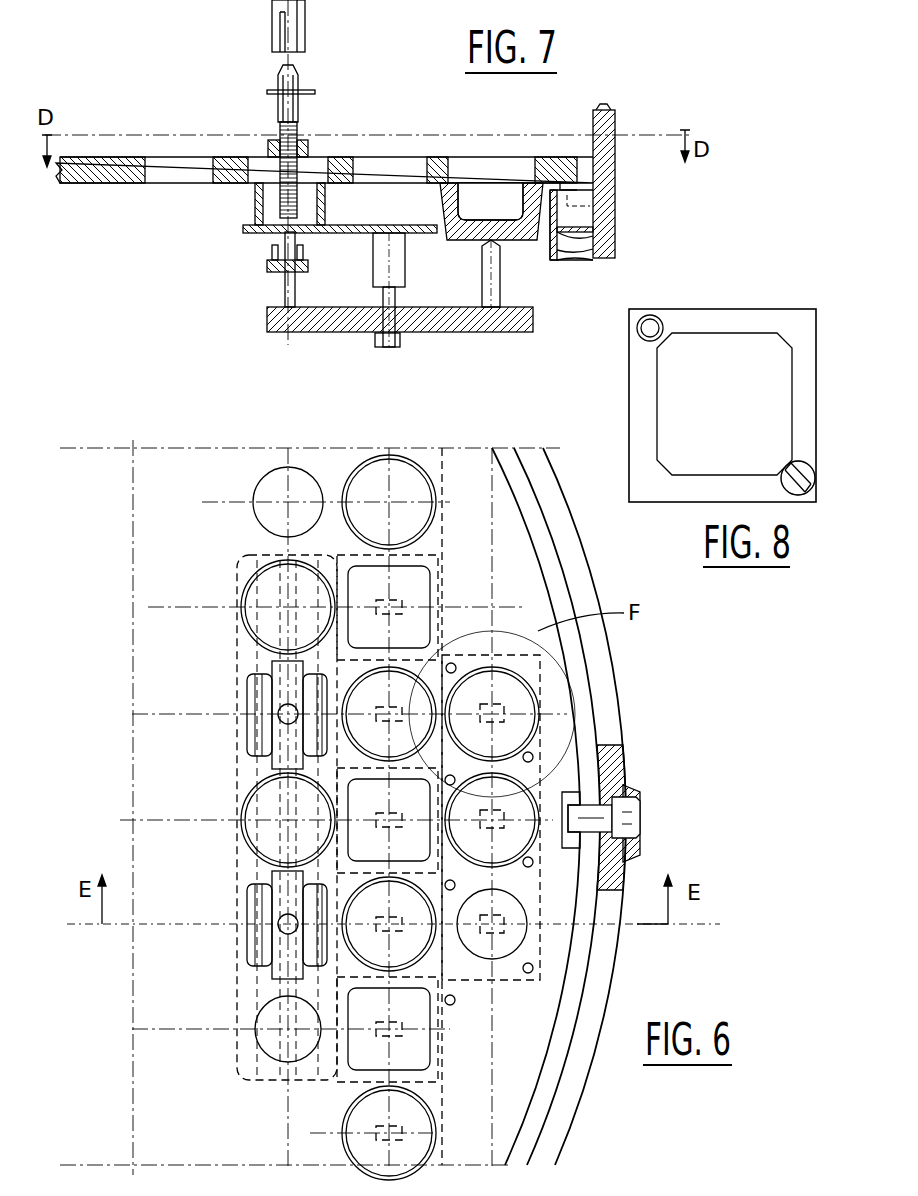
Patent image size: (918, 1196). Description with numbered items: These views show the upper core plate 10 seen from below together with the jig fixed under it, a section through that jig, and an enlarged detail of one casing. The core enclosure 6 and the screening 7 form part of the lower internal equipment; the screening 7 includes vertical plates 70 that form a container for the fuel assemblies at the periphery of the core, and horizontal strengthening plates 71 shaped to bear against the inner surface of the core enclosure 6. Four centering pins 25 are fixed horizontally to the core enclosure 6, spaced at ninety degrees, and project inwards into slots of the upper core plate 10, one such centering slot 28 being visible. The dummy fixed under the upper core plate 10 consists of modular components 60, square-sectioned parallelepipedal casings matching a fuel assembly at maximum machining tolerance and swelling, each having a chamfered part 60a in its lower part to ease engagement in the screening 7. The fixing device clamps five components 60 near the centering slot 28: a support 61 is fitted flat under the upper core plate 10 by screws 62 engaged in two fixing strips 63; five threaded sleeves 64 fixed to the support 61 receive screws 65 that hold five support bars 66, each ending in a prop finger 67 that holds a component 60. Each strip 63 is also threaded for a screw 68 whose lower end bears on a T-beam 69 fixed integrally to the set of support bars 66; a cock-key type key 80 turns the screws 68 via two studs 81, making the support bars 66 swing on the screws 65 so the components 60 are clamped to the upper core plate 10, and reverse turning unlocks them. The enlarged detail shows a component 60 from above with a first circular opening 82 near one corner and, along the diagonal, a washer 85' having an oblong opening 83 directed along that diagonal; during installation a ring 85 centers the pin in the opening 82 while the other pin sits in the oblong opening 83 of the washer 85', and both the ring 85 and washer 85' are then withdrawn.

In FIG. 7, the core enclosure 6 is at (606, 110).
In FIG. 6, the core enclosure 6 is at (620, 750).
In FIG. 6, the screening 7 is at (447, 1007).
In FIG. 7, the upper core plate 10 is at (540, 157).
In FIG. 6, the centering pin 25 is at (633, 817).
In FIG. 6, the centering slot 28 is at (572, 848).
In FIG. 7, the modular component 60 is at (490, 229).
In FIG. 6, the modular component 60 is at (542, 945).
In FIG. 7, the chamfered part 60a is at (462, 238).
In FIG. 7, the support 61 is at (250, 233).
In FIG. 6, the support 61 is at (240, 655).
In FIG. 6, the screw 62 is at (247, 977).
In FIG. 7, the fixing strip 63 is at (270, 148).
In FIG. 6, the fixing strip 63 is at (247, 693).
In FIG. 7, the threaded sleeve 64 is at (405, 277).
In FIG. 7, the screw 65 is at (385, 318).
In FIG. 7, the support bar 66 is at (285, 330).
In FIG. 7, the prop finger 67 is at (502, 288).
In FIG. 7, the screw 68 is at (300, 135).
In FIG. 7, the T-beam 69 is at (285, 287).
In FIG. 7, the vertical plate 70 is at (593, 253).
In FIG. 7, the horizontal strengthening plate 71 is at (593, 232).
In FIG. 7, the key 80 is at (303, 34).
In FIG. 7, the stud 81 is at (307, 85).
In FIG. 8, the first circular opening 82 is at (660, 318).
In FIG. 6, the first circular opening 82 is at (452, 663).
In FIG. 8, the oblong opening 83 is at (801, 495).
In FIG. 6, the oblong opening 83 is at (534, 757).
In FIG. 8, the ring 85 is at (635, 305).
In FIG. 8, the washer 85' is at (786, 462).